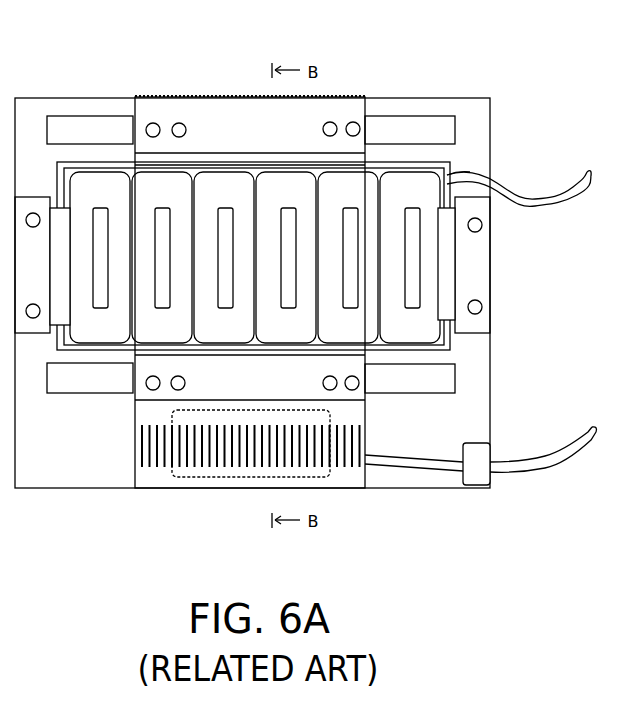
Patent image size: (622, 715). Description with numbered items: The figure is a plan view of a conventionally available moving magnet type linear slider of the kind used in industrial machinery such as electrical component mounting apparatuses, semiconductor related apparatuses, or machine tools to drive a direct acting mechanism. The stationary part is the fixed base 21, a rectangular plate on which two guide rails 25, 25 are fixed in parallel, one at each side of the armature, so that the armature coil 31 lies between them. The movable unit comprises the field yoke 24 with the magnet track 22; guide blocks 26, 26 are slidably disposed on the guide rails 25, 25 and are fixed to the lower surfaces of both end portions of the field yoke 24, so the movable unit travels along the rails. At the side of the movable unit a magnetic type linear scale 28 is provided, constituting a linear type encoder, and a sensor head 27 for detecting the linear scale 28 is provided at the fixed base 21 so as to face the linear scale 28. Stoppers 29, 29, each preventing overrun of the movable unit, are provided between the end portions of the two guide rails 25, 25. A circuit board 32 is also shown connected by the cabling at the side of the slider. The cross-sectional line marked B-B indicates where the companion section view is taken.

The fixed base 21 is at (38, 127).
The magnet track 22 is at (492, 309).
The field yoke 24 is at (253, 97).
The guide rail 25 is at (94, 124).
The guide block 26 is at (297, 152).
The sensor head 27 is at (330, 478).
The linear scale 28 is at (155, 477).
The stopper 29 is at (63, 224).
The armature coil 31 is at (418, 333).
The circuit board 32 is at (447, 188).